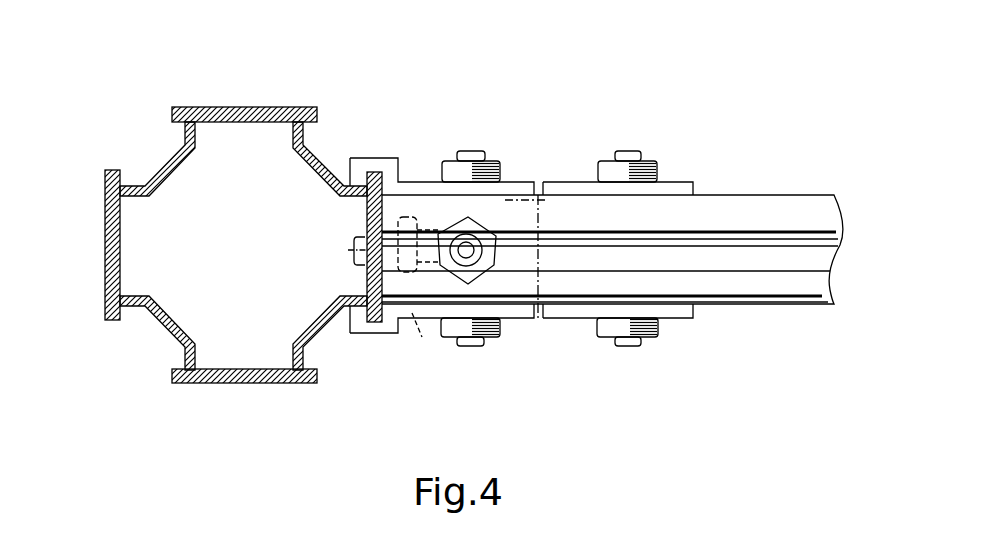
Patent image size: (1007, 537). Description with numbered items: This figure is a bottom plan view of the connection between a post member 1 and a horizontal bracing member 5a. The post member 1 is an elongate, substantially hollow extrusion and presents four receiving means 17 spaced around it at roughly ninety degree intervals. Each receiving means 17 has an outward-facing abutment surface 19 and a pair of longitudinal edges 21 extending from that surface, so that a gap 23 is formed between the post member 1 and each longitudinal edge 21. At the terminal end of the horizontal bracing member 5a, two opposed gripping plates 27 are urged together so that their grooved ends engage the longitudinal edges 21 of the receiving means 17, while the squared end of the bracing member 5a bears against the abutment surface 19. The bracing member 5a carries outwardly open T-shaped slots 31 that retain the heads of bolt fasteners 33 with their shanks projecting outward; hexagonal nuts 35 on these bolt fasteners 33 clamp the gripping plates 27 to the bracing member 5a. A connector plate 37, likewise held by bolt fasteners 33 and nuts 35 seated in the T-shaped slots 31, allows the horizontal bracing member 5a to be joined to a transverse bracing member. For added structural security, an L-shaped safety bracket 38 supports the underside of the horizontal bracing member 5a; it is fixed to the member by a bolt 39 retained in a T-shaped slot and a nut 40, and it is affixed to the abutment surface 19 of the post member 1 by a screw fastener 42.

The post member 1 is at (232, 252).
The horizontal bracing member 5a is at (794, 196).
The receiving means 17 is at (253, 122).
The abutment surface 19 is at (252, 107).
The longitudinal edges 21 is at (113, 170).
The gap 23 is at (132, 170).
The gripping plates 27 is at (532, 181).
The T-shaped slots 31 is at (814, 255).
The bolt fasteners 33 is at (477, 150).
The hexagonal nuts 35 is at (500, 158).
The connector plate 37 is at (697, 183).
The L-shaped safety bracket 38 is at (524, 280).
The bolt 39 is at (445, 215).
The nut 40 is at (408, 215).
The screw fastener 42 is at (425, 318).